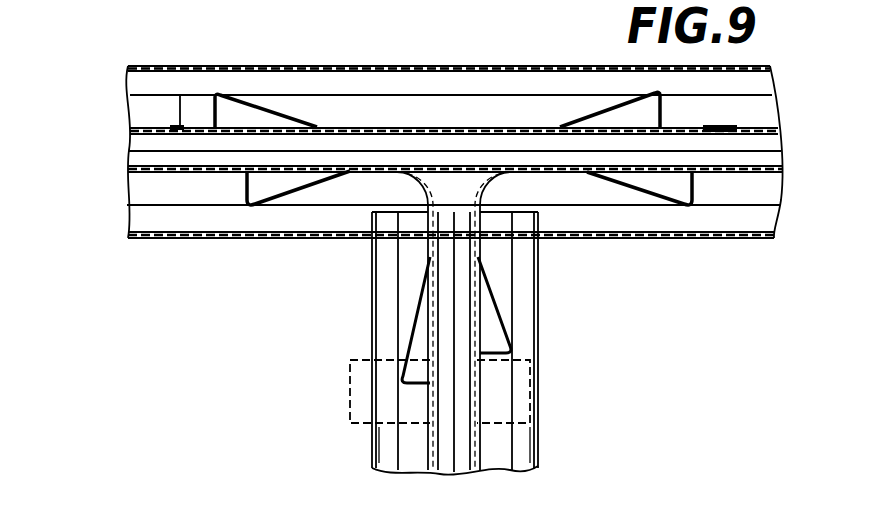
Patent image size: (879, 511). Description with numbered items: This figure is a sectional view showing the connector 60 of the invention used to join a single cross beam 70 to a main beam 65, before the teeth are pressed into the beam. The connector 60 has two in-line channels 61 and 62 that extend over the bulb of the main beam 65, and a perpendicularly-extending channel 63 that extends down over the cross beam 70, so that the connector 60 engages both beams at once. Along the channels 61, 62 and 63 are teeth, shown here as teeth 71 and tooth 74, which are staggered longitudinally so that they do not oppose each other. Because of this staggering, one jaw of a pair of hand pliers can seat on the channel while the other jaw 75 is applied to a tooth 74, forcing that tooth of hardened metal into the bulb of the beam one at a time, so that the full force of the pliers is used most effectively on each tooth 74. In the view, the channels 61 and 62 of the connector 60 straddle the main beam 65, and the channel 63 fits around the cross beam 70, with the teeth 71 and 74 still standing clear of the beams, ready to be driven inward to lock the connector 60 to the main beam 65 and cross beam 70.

The connector 60 is at (401, 191).
The channel 61 is at (180, 96).
The channel 62 is at (720, 124).
The perpendicularly-extending channel 63 is at (430, 262).
The main beam 65 is at (105, 106).
The cross beam 70 is at (362, 329).
The teeth 71 is at (350, 413).
The tooth 74 is at (263, 106).
The jaw 75 is at (531, 418).